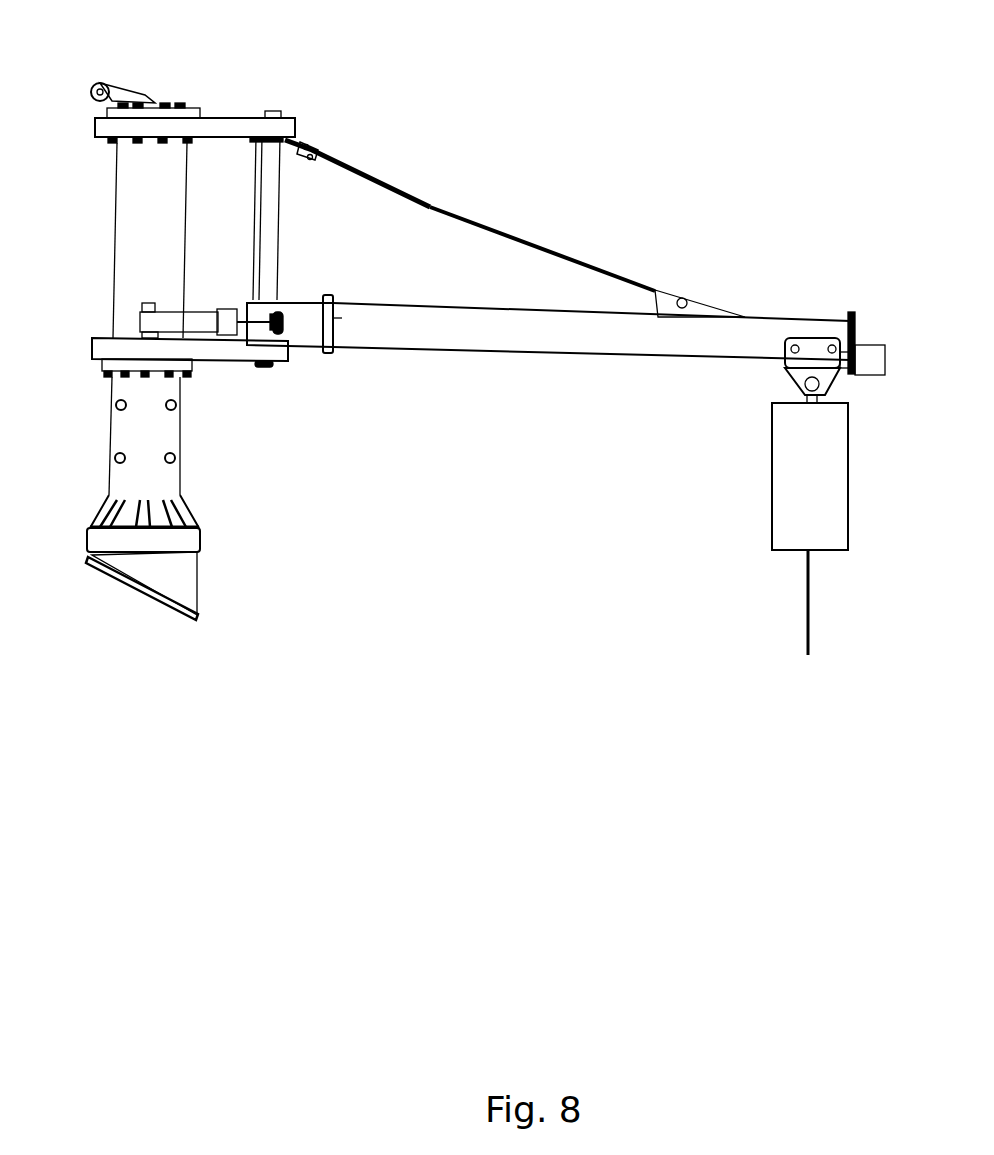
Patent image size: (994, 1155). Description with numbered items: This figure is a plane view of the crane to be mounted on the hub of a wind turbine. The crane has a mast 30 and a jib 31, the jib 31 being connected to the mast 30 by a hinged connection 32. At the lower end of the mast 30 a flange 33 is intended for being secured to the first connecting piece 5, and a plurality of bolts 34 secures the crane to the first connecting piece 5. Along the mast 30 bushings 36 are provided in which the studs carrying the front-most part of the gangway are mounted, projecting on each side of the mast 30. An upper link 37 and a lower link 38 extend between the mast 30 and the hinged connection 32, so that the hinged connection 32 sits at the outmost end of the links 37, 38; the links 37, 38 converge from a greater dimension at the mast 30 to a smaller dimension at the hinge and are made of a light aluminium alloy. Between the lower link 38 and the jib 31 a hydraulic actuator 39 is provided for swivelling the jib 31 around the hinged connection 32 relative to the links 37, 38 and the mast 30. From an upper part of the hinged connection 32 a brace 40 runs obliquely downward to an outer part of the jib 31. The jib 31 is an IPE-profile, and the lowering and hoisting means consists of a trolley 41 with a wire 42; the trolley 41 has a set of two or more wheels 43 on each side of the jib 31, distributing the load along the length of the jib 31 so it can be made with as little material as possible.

The first connecting piece 5 is at (180, 565).
The mast 30 is at (160, 179).
The jib 31 is at (510, 332).
The hinged connection 32 is at (270, 205).
The flange 33 is at (185, 517).
The bolts 34 is at (100, 512).
The bushings 36 is at (112, 405).
The upper link 37 is at (229, 118).
The lower link 38 is at (222, 352).
The hydraulic actuator 39 is at (203, 320).
The brace 40 is at (415, 190).
The trolley 41 is at (764, 403).
The wire 42 is at (807, 578).
The wheels 43 is at (793, 343).